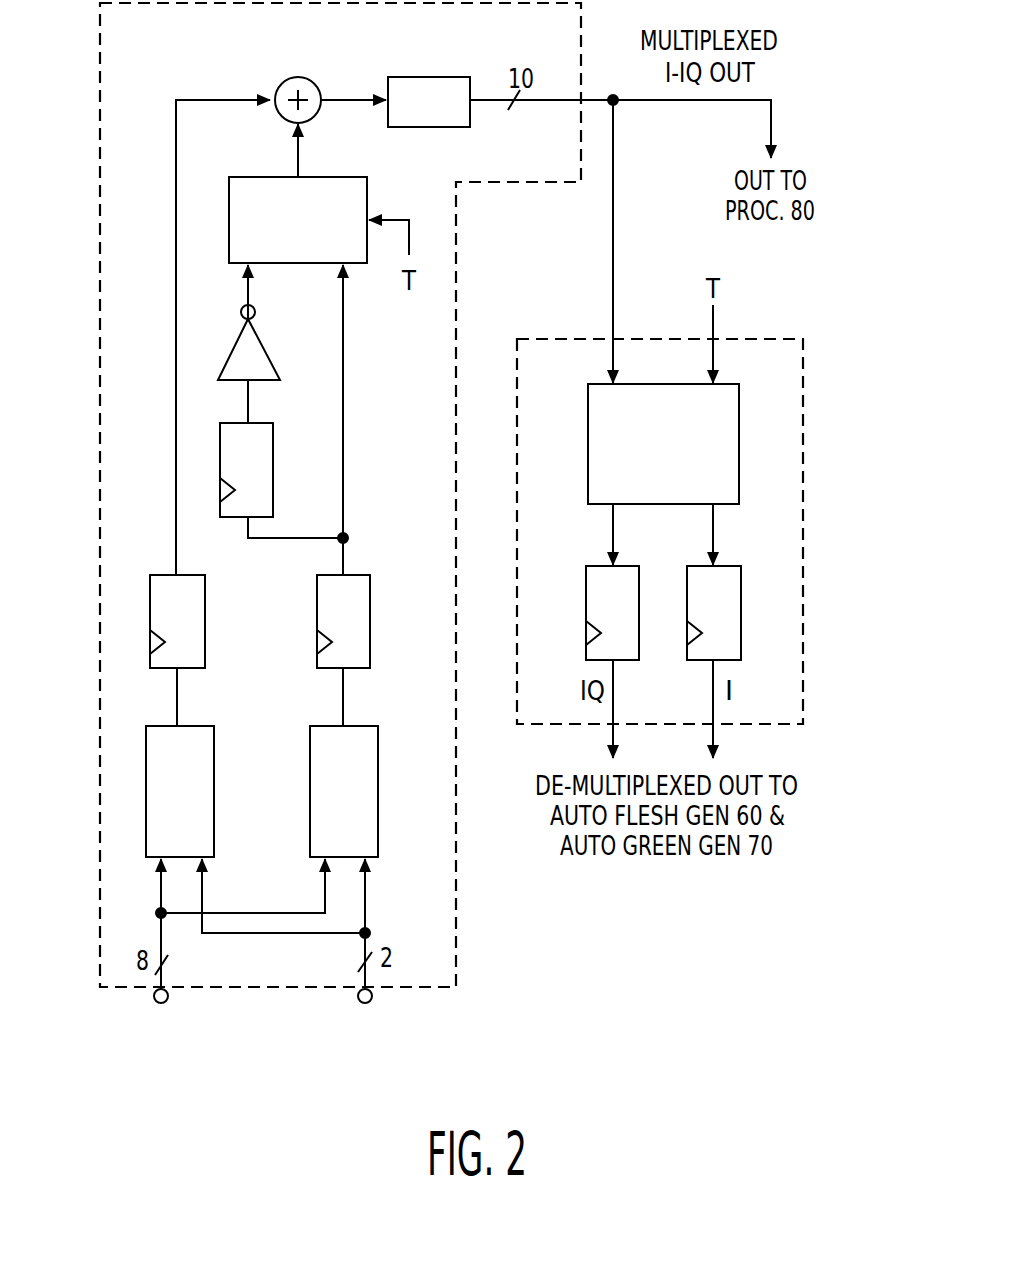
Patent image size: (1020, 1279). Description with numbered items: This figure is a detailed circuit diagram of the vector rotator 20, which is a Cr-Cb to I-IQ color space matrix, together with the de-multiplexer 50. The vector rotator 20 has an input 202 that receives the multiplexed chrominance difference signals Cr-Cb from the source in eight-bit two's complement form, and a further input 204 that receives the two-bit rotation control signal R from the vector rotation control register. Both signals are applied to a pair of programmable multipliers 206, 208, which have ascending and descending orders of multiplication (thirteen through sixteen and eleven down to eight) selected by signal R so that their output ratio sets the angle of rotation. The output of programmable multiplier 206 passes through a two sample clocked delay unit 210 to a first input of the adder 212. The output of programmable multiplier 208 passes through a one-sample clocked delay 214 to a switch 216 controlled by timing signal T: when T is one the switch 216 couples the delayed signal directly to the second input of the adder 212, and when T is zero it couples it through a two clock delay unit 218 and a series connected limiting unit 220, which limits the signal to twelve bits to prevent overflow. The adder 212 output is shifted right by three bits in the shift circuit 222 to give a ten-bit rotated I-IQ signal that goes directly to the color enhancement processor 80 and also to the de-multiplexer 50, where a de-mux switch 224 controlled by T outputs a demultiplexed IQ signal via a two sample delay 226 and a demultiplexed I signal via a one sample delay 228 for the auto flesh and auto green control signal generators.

The vector rotator 20 is at (456, 247).
The de-multiplexer 50 is at (575, 339).
The color enhancement processor 80 is at (770, 339).
The input 202 is at (153, 997).
The further input 204 is at (373, 997).
The programmable multiplier 206 is at (214, 748).
The programmable multiplier 208 is at (310, 820).
The two sample clocked delay unit 210 is at (205, 610).
The adder 212 is at (286, 78).
The one-sample clocked delay 214 is at (370, 603).
The switch 216 is at (262, 177).
The two clock delay unit 218 is at (273, 455).
The limiting unit 220 is at (240, 328).
The three-bit shift circuit 222 is at (403, 77).
The de-mux switch 224 is at (739, 408).
The two sample delay 226 is at (586, 580).
The one sample delay 228 is at (741, 580).